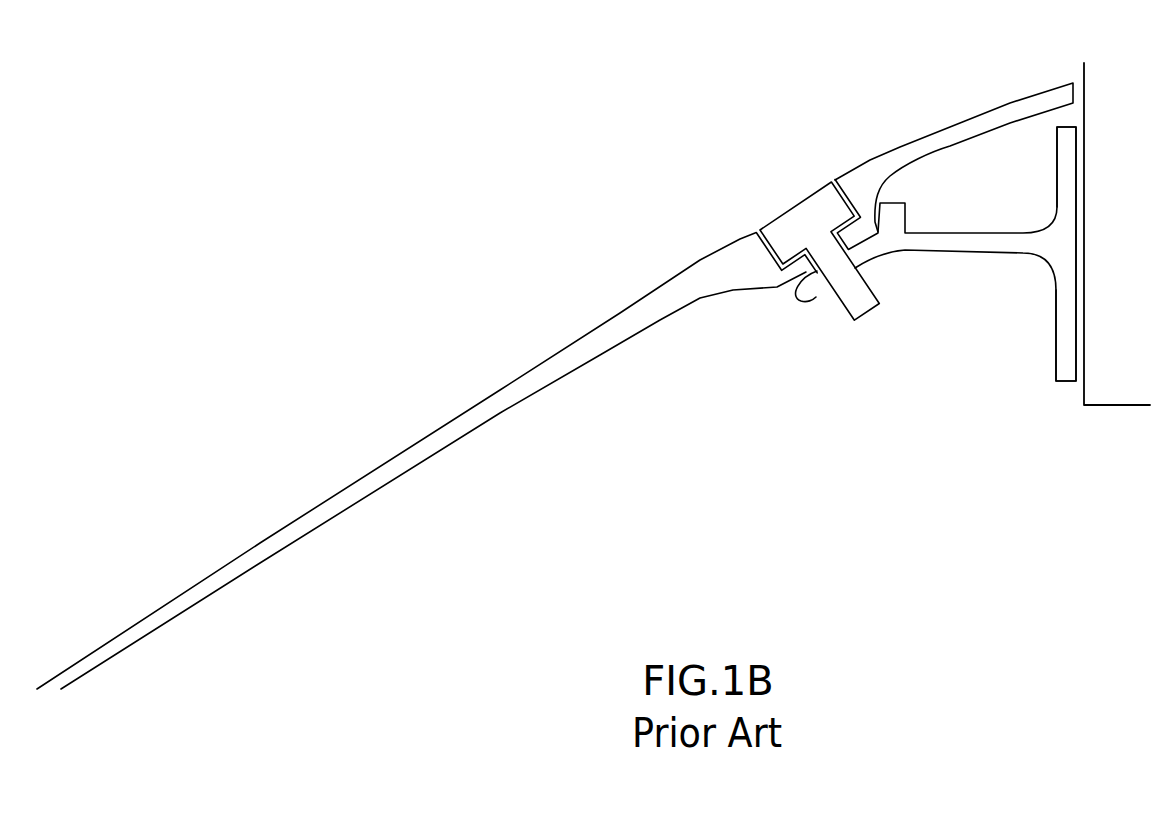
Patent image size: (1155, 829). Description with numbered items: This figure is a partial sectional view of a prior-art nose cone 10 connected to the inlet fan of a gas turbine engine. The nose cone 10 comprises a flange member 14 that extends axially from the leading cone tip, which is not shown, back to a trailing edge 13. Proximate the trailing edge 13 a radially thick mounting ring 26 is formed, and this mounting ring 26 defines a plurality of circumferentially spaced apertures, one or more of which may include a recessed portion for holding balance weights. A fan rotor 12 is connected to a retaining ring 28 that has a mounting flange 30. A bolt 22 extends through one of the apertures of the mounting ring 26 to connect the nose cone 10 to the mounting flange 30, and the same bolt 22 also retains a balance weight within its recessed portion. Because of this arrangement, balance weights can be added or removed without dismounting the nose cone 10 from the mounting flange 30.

The nose cone 10 is at (324, 426).
The fan rotor 12 is at (1097, 388).
The trailing edge 13 is at (985, 110).
The flange member 14 is at (190, 588).
The bolt 22 is at (862, 299).
The mounting ring 26 is at (752, 277).
The retaining ring 28 is at (1063, 368).
The mounting flange 30 is at (810, 285).